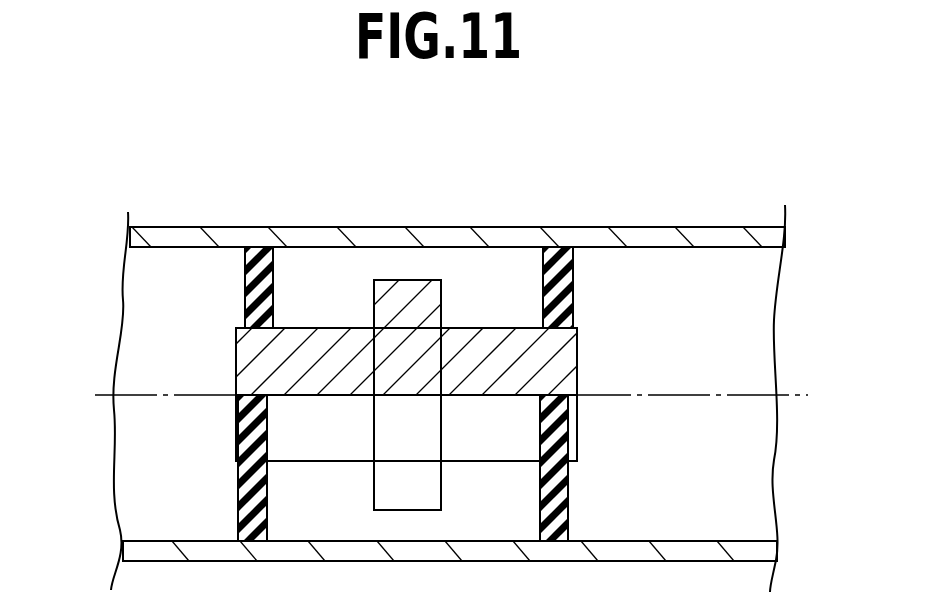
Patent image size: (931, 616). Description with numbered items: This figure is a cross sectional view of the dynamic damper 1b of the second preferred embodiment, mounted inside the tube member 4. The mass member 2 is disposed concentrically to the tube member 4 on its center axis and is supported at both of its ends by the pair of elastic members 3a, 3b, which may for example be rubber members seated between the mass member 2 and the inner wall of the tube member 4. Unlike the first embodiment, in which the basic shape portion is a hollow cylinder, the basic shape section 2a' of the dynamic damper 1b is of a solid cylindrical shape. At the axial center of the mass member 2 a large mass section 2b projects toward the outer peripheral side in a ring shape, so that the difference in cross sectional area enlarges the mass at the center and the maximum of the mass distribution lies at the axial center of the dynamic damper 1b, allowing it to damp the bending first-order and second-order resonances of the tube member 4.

The dynamic damper 1b is at (448, 278).
The mass member 2 is at (577, 428).
The basic shape section 2a' is at (434, 335).
The large mass section 2b is at (407, 280).
The elastic member 3a is at (257, 296).
The elastic member 3b is at (572, 289).
The tube member 4 is at (647, 241).